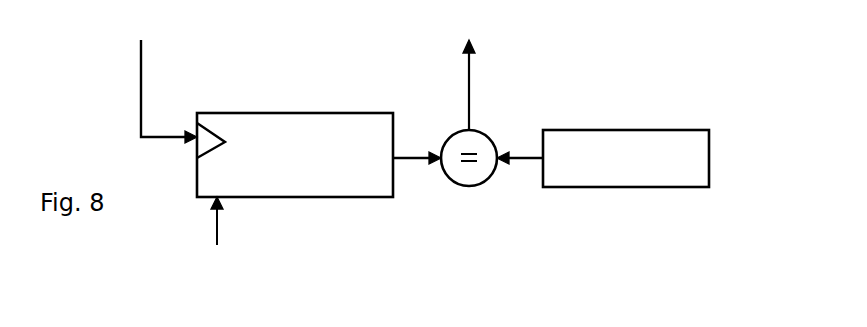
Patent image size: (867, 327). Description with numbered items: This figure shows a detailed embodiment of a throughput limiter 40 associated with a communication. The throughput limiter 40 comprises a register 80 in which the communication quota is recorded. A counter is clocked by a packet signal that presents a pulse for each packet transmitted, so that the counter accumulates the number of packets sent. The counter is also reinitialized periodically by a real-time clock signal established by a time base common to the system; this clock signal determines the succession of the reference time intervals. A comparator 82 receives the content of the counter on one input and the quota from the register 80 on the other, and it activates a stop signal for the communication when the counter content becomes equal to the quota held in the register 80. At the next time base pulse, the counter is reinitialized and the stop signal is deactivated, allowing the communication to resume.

The throughput limiter 40 is at (533, 86).
The register 80 is at (667, 168).
The comparator 82 is at (472, 168).